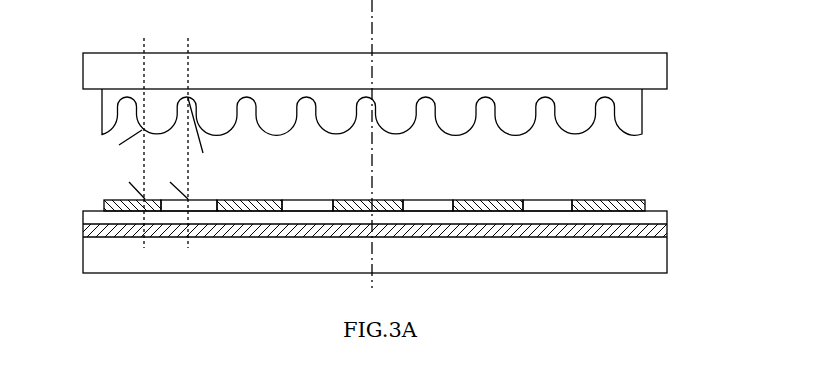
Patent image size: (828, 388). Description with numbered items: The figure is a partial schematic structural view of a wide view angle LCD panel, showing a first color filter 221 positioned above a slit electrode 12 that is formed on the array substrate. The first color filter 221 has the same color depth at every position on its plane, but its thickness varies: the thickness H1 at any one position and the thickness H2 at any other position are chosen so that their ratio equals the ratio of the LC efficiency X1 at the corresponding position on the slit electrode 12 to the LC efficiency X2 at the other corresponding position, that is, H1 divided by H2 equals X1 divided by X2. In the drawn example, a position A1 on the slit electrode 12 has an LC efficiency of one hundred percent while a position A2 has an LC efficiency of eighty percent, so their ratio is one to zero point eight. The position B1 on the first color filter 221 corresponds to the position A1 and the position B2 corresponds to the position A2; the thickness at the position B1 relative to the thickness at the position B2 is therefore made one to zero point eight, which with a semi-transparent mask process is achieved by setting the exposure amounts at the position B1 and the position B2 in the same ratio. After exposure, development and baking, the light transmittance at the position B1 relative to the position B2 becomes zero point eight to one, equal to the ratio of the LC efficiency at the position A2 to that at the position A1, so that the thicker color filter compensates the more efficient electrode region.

The slit electrode 12 is at (104, 201).
The first color filter 221 is at (628, 120).
The position B1 on the first color filter B1 is at (149, 44).
The position B2 on the first color filter B2 is at (183, 44).
The position A1 on the slit electrode A1 is at (139, 242).
The position A2 on the slit electrode A2 is at (183, 242).
The thickness H1 of the first color filter H1 is at (126, 139).
The thickness H2 of the first color filter H2 is at (205, 145).
The LC efficiency X1' X1 is at (137, 183).
The LC efficiency X2' X2 is at (178, 183).